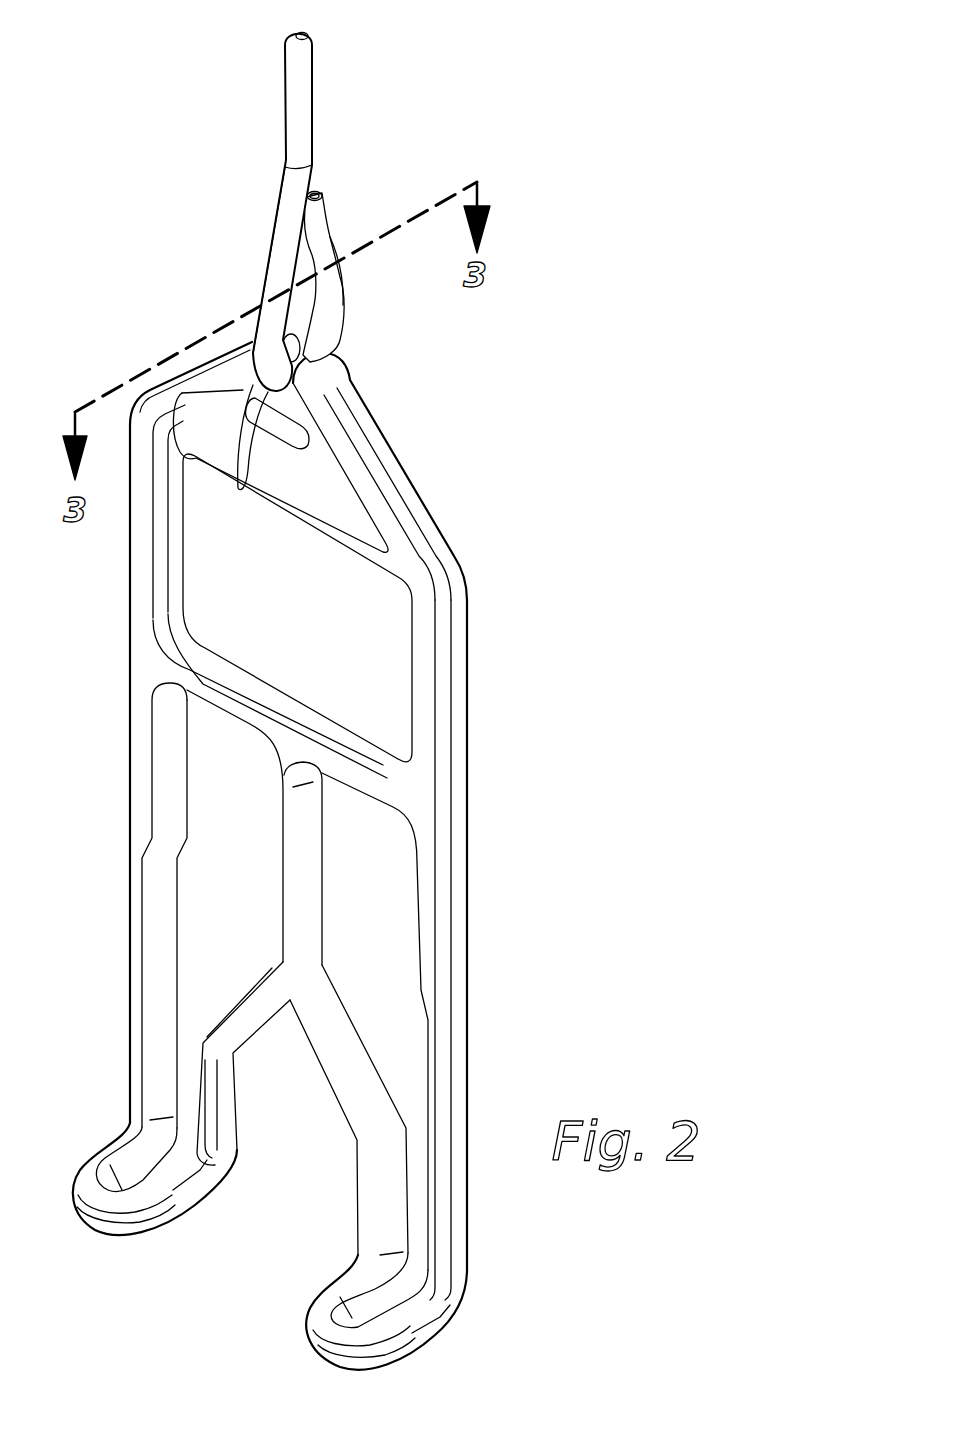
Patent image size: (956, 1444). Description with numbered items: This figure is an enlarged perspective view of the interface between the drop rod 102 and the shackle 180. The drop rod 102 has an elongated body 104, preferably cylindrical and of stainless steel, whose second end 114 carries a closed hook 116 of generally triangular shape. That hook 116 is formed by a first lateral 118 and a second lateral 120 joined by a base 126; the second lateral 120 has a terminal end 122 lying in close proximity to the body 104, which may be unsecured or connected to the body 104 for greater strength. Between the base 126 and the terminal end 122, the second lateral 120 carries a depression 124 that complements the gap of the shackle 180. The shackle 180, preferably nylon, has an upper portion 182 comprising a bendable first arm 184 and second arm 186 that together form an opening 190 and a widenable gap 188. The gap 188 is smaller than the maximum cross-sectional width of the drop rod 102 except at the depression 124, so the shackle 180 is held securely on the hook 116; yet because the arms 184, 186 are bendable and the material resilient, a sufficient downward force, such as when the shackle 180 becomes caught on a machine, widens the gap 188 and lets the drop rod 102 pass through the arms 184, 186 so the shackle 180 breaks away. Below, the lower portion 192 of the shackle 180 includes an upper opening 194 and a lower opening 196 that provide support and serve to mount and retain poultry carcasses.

The drop rod 102 is at (264, 283).
The elongated body 104 is at (313, 58).
The second end 114 is at (310, 156).
The hook 116 is at (283, 170).
The first lateral 118 is at (272, 245).
The second lateral 120 is at (330, 233).
The terminal end 122 is at (319, 194).
The depression 124 is at (338, 266).
The base 126 is at (253, 400).
The shackle 180 is at (372, 835).
The upper portion 182 is at (455, 577).
The first arm 184 is at (250, 353).
The second arm 186 is at (360, 405).
The gap 188 is at (305, 362).
The opening 190 is at (303, 435).
The lower portion 192 is at (468, 696).
The upper opening 194 is at (413, 720).
The lower opening 196 is at (422, 972).